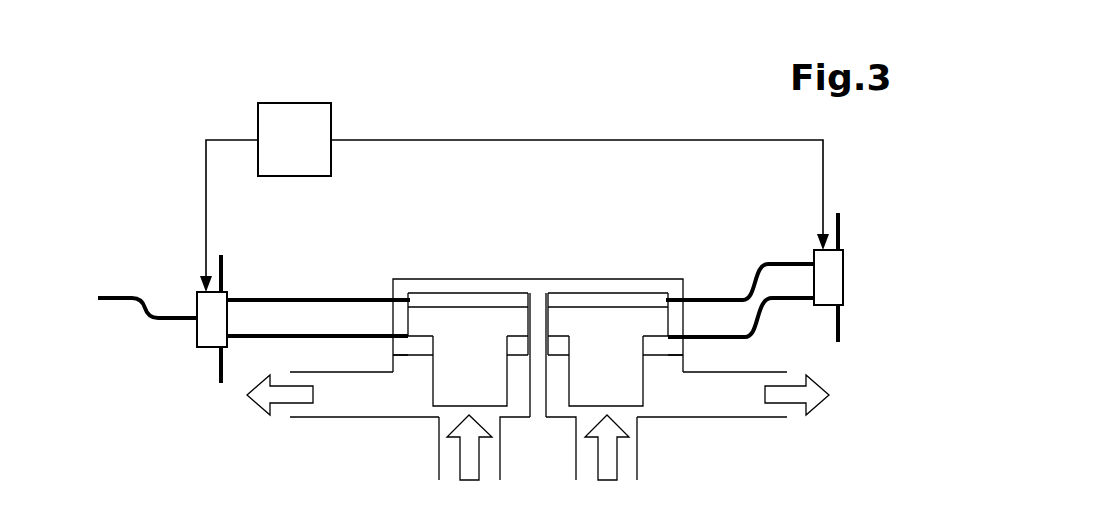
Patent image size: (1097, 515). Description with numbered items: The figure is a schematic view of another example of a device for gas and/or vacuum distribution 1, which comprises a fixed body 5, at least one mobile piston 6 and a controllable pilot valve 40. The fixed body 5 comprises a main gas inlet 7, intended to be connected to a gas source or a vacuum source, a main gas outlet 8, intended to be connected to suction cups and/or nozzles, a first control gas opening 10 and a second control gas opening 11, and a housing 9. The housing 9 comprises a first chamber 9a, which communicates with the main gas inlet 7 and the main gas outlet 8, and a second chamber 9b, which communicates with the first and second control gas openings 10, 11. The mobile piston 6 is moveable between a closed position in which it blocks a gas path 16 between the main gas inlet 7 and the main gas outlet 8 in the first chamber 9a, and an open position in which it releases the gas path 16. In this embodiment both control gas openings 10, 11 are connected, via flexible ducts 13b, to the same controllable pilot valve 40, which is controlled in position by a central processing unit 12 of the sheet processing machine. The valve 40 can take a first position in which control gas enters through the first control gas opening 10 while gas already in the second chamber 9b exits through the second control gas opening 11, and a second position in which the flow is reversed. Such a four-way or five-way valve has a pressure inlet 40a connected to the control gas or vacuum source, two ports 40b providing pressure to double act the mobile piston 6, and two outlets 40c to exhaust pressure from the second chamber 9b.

The device for gas and/or vacuum distribution 1 is at (424, 240).
The fixed body 5 is at (672, 278).
The mobile piston 6 is at (477, 358).
The main gas inlet 7 is at (480, 413).
The main gas outlet 8 is at (392, 388).
The housing 9 is at (507, 288).
The first chamber 9a is at (418, 397).
The second chamber 9b is at (447, 300).
The first control gas opening 10 is at (391, 297).
The second control gas opening 11 is at (393, 328).
The central processing unit 12 is at (281, 103).
The flexible ducts 13b is at (295, 334).
The gas path 16 is at (392, 407).
The controllable pilot valve 40 is at (197, 338).
The pressure inlet 40a is at (197, 318).
The ports 40b is at (230, 300).
The outlets 40c is at (199, 292).